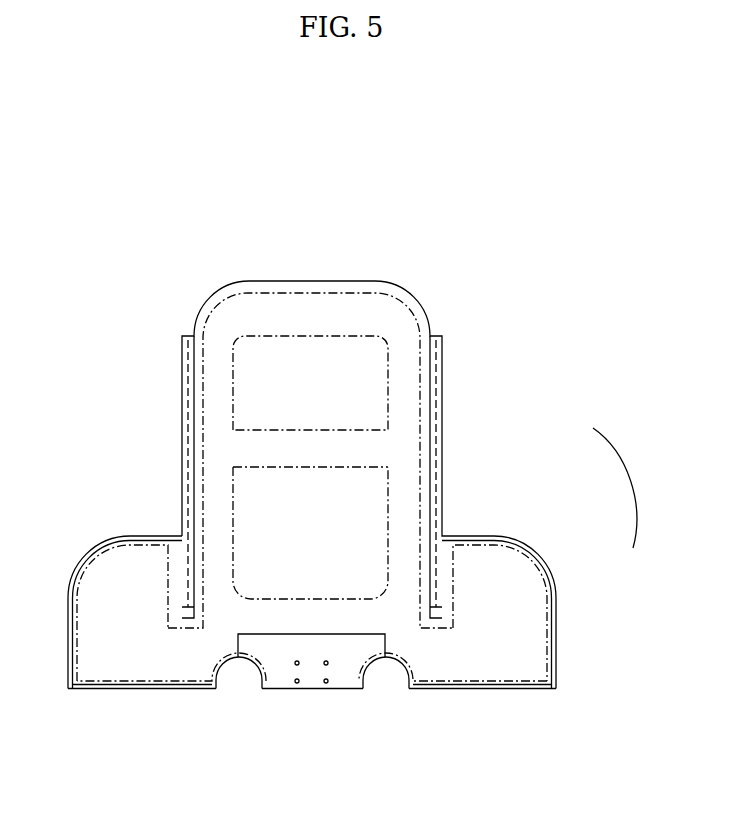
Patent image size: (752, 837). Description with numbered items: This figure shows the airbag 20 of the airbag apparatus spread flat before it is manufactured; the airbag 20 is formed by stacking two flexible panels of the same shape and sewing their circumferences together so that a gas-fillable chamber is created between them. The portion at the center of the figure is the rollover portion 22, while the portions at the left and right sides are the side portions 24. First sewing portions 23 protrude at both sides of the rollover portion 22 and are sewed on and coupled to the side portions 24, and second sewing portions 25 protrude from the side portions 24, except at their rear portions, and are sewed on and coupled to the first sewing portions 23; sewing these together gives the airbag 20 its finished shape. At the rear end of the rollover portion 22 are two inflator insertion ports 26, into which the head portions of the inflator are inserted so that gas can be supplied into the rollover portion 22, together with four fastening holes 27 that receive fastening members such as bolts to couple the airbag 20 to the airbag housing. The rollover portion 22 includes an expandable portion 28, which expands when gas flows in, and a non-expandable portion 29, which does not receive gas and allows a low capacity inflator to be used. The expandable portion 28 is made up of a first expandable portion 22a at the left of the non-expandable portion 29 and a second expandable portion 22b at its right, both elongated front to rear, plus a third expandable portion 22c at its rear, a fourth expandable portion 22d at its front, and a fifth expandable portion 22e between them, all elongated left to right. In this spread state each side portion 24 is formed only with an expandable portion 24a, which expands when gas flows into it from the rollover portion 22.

The airbag 20 is at (62, 194).
The rollover portion 22 is at (314, 262).
The first expandable portion 22a is at (222, 537).
The second expandable portion 22b is at (408, 542).
The third expandable portion 22c is at (302, 617).
The fourth expandable portion 22d is at (315, 318).
The fifth expandable portion 22e is at (305, 455).
The first sewing portions 23 is at (182, 357).
The side portions 24 is at (95, 701).
The expandable portion 24a is at (126, 668).
The second sewing portions 25 is at (68, 625).
The inflator insertion ports 26 is at (248, 679).
The fastening holes 27 is at (294, 683).
The expandable portion 28 is at (625, 488).
The non-expandable portion 29 is at (260, 490).